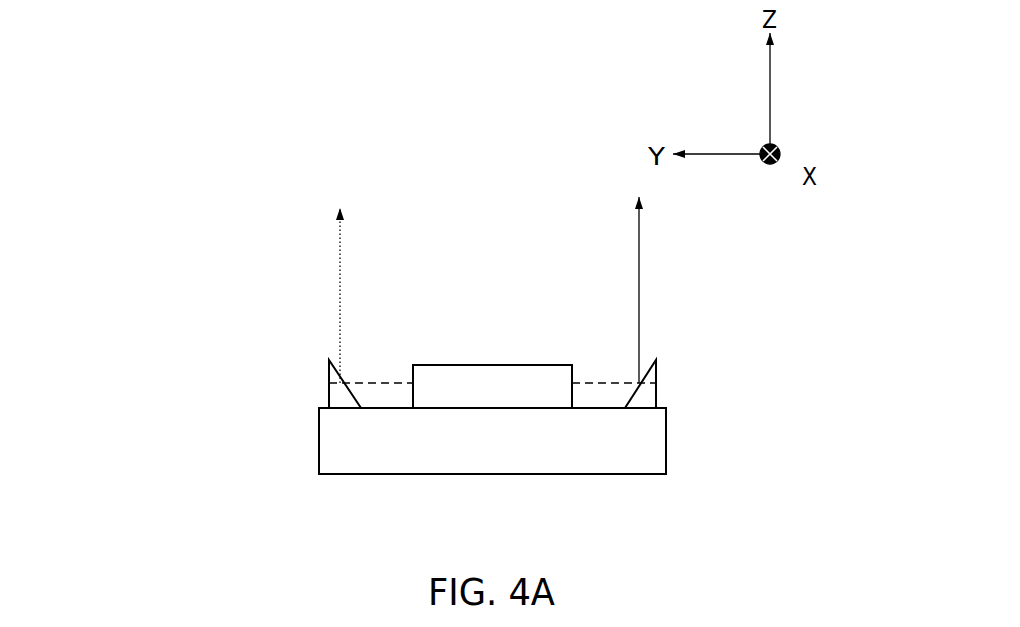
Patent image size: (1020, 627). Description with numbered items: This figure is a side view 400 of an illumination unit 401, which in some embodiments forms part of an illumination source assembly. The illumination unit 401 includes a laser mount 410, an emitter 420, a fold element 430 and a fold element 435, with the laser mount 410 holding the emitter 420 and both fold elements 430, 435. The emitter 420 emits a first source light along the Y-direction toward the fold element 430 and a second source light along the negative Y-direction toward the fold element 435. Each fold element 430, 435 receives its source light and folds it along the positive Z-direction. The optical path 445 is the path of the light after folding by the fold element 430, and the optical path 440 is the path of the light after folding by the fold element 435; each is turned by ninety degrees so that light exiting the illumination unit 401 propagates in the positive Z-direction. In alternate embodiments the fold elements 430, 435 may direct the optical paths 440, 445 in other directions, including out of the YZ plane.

The side view 400 is at (444, 313).
The illumination unit 401 is at (457, 380).
The laser mount 410 is at (318, 437).
The emitter 420 is at (492, 365).
The fold element 430 is at (328, 385).
The fold element 435 is at (658, 385).
The optical path 440 is at (638, 312).
The optical path 445 is at (342, 297).